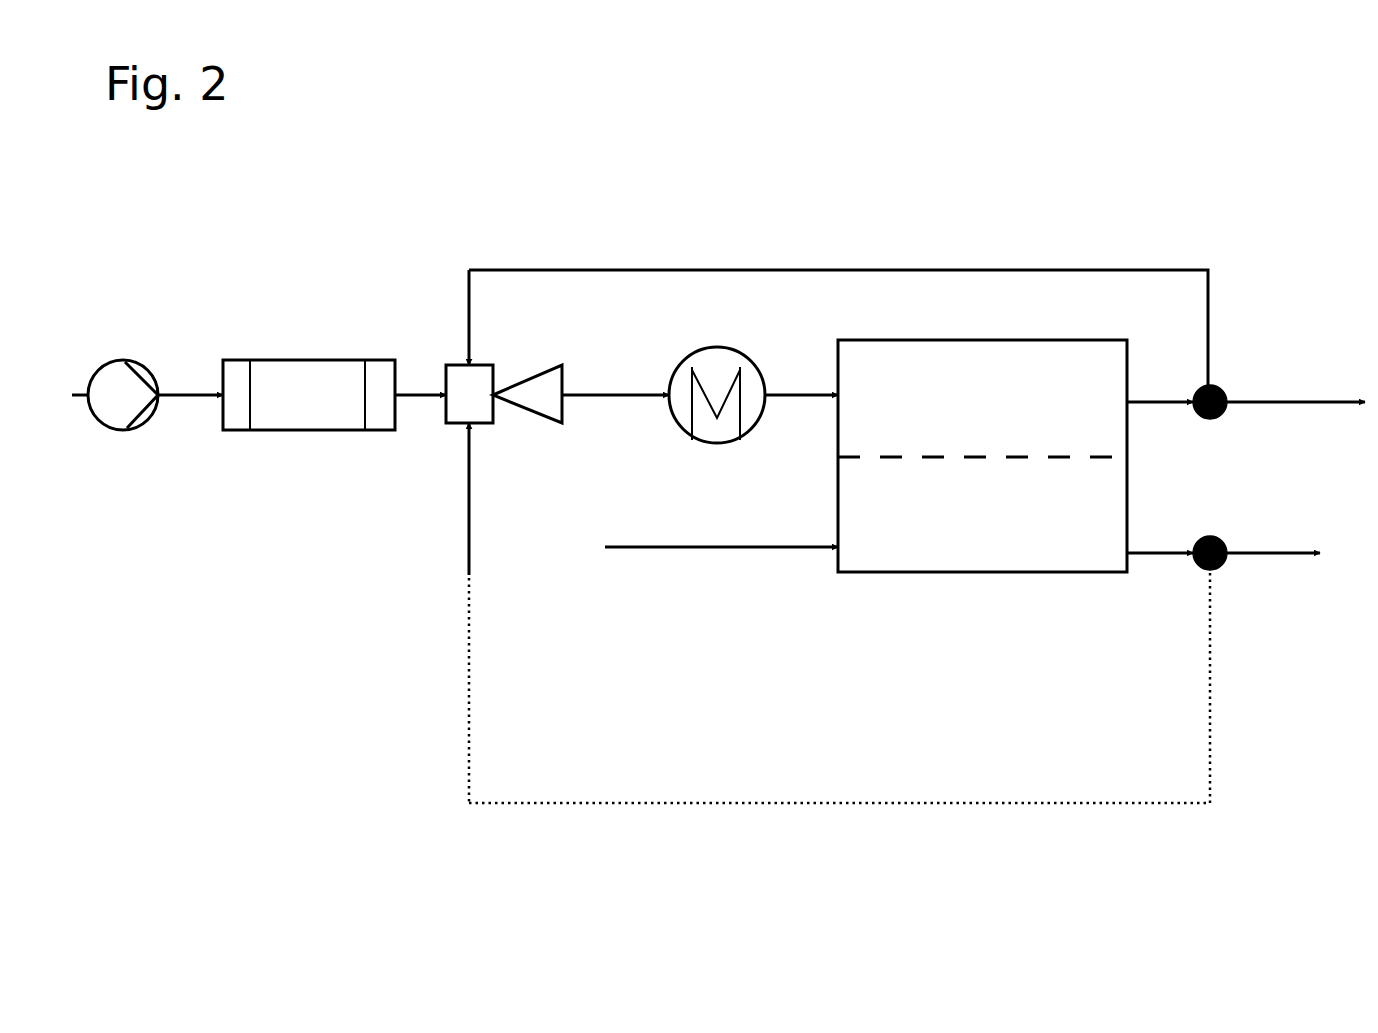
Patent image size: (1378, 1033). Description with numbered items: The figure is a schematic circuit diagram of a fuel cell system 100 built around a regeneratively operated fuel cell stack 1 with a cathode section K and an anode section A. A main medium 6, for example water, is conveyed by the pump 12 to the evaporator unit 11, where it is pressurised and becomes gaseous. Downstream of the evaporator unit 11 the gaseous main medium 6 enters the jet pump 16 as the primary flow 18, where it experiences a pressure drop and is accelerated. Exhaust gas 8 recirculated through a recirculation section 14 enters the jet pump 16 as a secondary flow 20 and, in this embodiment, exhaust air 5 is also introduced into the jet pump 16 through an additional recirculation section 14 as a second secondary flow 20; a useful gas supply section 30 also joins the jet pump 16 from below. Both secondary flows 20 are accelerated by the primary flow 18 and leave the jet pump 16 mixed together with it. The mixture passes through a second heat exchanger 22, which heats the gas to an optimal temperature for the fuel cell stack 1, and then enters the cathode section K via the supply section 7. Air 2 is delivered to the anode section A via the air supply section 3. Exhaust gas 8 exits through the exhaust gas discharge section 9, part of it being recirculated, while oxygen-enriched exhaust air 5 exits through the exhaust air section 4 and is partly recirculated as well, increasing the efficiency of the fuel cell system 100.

The fuel cell system 100 is at (349, 198).
The pump 12 is at (126, 360).
The main medium 6 is at (190, 402).
The evaporator unit 11 is at (280, 360).
The primary flow 18 is at (420, 400).
The jet pump 16 is at (455, 425).
The useful gas supply section 30 is at (463, 440).
The secondary flow 20 is at (467, 356).
The second heat exchanger 22 is at (700, 350).
The supply section 7 is at (812, 350).
The fuel cell stack 1 is at (922, 340).
The cathode section K is at (1000, 378).
The anode section A is at (997, 548).
The recirculation section 14 is at (1035, 268).
The exhaust gas discharge section 9 is at (1127, 402).
The exhaust gas 8 is at (1165, 402).
The air 2 is at (680, 548).
The air supply section 3 is at (834, 553).
The exhaust air section 4 is at (1130, 558).
The exhaust air 5 is at (1310, 560).